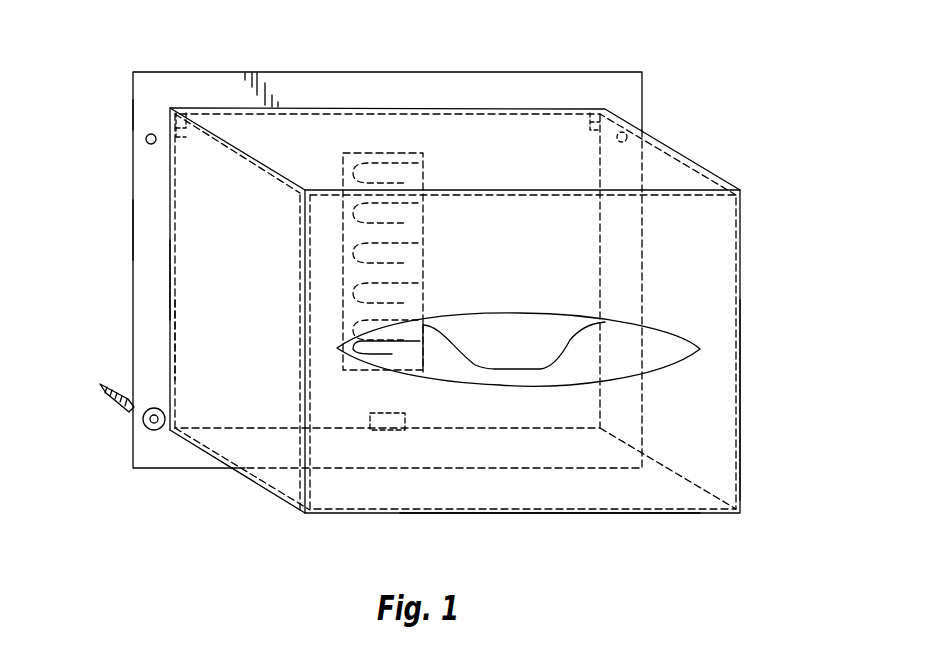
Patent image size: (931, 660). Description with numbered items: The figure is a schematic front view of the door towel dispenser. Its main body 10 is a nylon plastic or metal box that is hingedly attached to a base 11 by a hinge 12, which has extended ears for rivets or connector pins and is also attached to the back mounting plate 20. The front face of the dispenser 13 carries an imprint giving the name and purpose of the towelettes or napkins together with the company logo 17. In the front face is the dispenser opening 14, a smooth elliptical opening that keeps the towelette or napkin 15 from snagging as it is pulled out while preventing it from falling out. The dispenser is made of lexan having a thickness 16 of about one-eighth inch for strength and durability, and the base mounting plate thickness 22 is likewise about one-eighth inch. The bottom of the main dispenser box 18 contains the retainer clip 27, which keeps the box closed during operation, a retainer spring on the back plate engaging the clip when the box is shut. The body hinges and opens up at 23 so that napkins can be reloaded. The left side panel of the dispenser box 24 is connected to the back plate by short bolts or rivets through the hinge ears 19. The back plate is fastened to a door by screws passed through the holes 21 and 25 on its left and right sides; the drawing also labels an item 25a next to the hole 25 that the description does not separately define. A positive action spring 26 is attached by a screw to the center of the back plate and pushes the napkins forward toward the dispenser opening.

The main body 10 is at (474, 140).
The base 11 is at (640, 93).
The hinge 12 is at (627, 138).
The front face of the dispenser 13 is at (622, 270).
The dispenser opening 14 is at (663, 330).
The towelette/napkin 15 is at (567, 357).
The thickness 16 is at (742, 408).
The logo 17 is at (583, 485).
The bottom of the main dispenser box 18 is at (532, 515).
The hinge ears 19 is at (177, 125).
The back mounting plate 20 is at (142, 117).
The hole 21 is at (146, 139).
The base mounting plate thickness 22 is at (133, 233).
The hinge opening location 23 is at (170, 275).
The left side panel of the dispenser box 24 is at (218, 336).
The hole 25 is at (143, 421).
The screw 25a is at (100, 388).
The positive action spring 26 is at (345, 285).
The retainer clip 27 is at (385, 430).